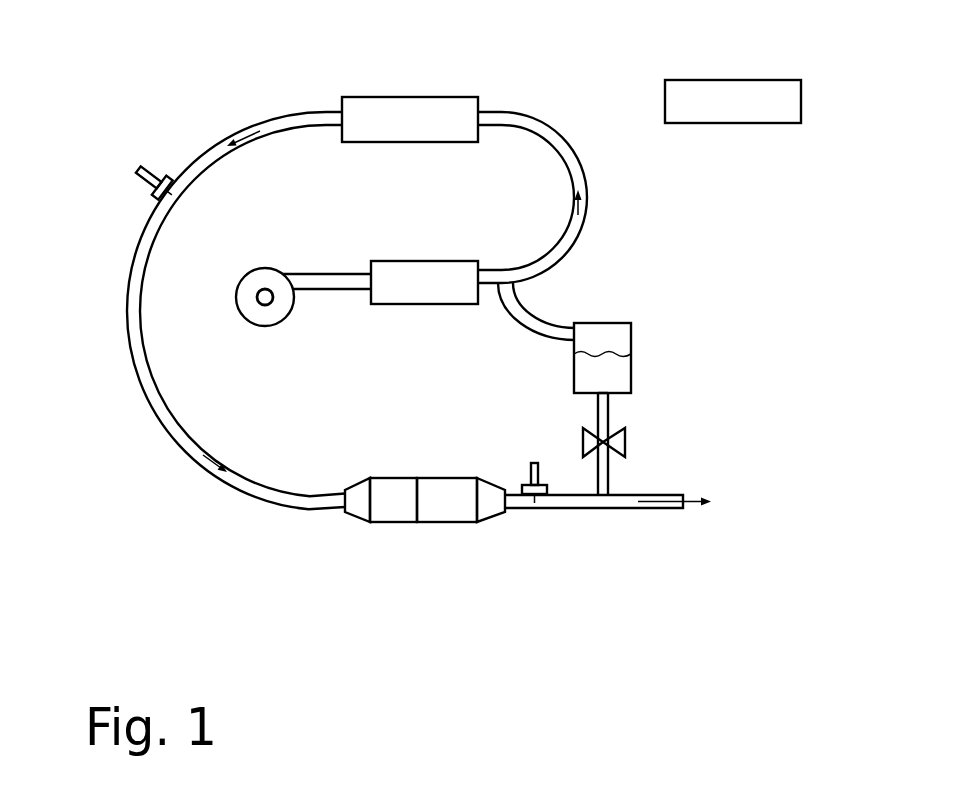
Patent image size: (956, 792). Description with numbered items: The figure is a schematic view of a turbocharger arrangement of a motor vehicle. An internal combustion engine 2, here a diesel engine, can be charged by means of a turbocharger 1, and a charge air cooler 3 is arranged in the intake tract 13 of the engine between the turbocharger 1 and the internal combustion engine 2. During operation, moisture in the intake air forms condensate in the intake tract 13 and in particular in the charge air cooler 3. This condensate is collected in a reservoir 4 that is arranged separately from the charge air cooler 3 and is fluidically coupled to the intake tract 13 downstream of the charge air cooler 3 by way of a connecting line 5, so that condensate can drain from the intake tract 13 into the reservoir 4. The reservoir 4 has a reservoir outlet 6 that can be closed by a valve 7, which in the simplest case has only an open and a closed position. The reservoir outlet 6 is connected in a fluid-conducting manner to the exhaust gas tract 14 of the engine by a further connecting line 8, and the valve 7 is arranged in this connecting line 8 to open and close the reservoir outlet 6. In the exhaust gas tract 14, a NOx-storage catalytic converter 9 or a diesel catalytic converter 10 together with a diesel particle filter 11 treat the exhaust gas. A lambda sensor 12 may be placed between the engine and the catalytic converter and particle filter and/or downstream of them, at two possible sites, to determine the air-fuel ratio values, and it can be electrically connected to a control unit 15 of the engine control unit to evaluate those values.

The turbocharger 1 is at (282, 311).
The internal combustion engine 2 is at (437, 107).
The charge air cooler 3 is at (412, 290).
The reservoir 4 is at (620, 372).
The connecting line 5 is at (525, 322).
The reservoir outlet 6 is at (598, 393).
The valve 7 is at (620, 440).
The further connecting line 8 is at (605, 415).
The NOx-storage catalytic converter 9 is at (376, 545).
The diesel catalytic converter 10 is at (403, 510).
The diesel particle filter 11 is at (448, 507).
The lambda sensor 12 is at (138, 168).
The intake tract 13 is at (568, 163).
The exhaust gas tract 14 is at (160, 407).
The control unit 15 is at (723, 112).